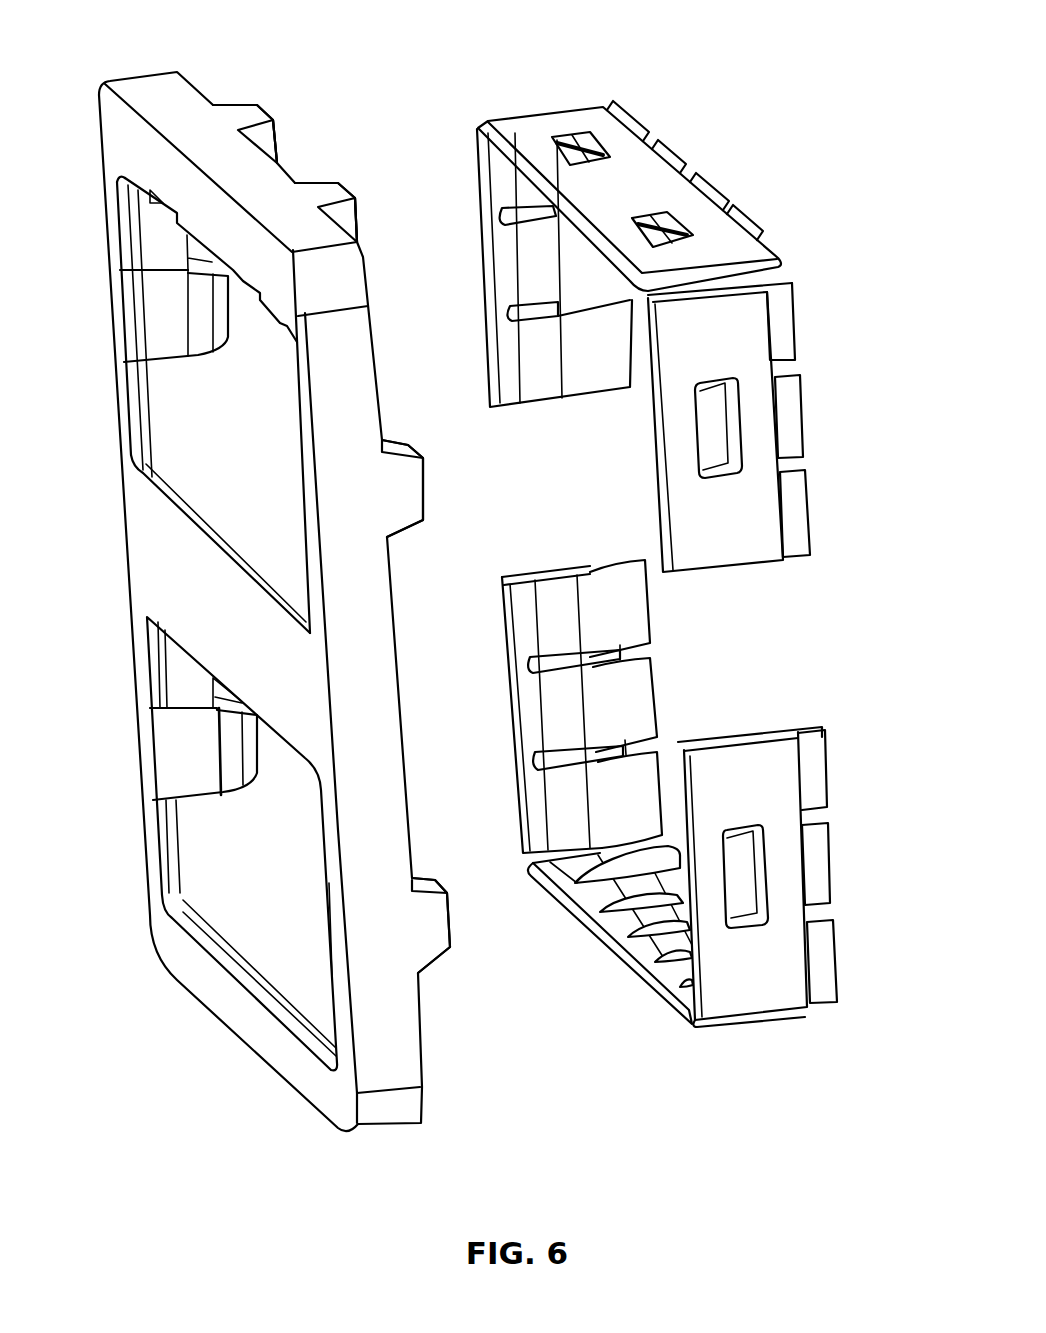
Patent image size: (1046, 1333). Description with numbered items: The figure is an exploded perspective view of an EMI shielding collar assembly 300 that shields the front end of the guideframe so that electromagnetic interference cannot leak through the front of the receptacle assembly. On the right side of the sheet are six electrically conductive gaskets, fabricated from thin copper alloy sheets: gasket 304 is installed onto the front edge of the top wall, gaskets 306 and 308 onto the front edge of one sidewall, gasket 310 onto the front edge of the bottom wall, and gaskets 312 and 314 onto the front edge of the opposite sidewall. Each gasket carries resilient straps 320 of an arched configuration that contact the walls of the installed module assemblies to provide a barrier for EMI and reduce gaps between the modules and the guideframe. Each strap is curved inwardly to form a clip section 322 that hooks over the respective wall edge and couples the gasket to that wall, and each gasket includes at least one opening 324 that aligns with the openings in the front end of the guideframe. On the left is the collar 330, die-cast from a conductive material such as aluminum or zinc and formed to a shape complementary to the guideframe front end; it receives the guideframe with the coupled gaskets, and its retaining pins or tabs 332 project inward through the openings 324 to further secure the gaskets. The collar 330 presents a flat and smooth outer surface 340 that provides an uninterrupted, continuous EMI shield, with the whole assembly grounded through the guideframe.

The EMI shielding collar assembly 300 is at (702, 65).
The electrically conductive gasket 304 is at (645, 193).
The gasket 306 is at (503, 273).
The gasket 308 is at (530, 621).
The gasket 310 is at (627, 927).
The gasket 312 is at (755, 807).
The gasket 314 is at (752, 343).
The resilient straps 320 is at (607, 378).
The clip section 322 is at (577, 561).
The opening 324 is at (767, 920).
The collar 330 is at (136, 49).
The retaining pins or tabs 332 is at (240, 115).
The outer surface 340 is at (257, 650).